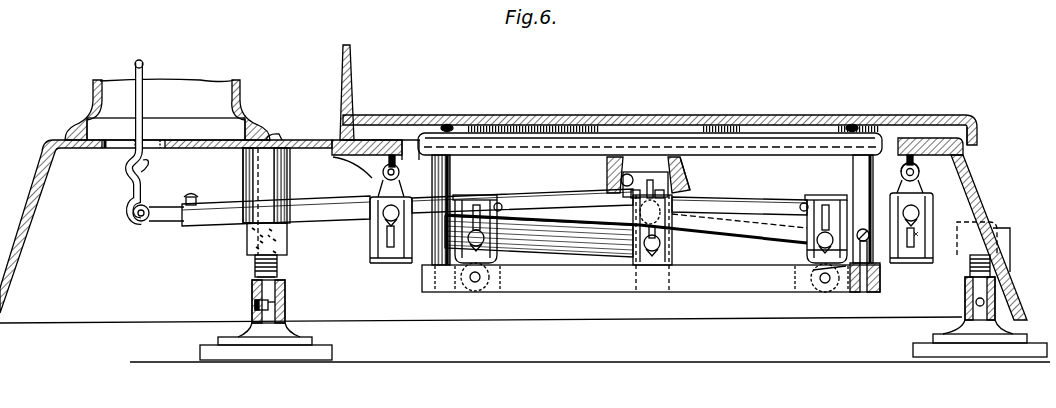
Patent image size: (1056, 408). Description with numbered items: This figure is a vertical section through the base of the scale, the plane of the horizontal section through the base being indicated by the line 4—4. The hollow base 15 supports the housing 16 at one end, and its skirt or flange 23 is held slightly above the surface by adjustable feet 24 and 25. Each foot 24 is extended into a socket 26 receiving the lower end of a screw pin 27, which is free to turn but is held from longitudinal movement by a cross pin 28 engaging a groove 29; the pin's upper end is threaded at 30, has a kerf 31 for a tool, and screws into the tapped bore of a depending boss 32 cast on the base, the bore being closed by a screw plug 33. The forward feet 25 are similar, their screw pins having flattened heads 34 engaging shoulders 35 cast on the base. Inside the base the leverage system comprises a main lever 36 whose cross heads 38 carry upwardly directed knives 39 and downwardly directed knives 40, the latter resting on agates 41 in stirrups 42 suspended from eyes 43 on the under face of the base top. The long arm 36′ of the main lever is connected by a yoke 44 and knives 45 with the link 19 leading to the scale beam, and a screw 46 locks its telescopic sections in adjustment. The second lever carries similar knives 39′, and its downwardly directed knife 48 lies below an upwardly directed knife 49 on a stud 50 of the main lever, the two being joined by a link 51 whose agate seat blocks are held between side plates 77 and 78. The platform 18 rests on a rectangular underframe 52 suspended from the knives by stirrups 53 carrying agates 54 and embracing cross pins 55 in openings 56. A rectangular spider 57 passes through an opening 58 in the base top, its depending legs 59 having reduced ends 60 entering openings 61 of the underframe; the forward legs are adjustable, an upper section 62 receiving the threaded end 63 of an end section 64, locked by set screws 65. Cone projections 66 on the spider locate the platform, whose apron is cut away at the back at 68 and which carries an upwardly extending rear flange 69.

The section line 4— 4 is at (23, 122).
The hollow base 15 is at (60, 140).
The housing 16 is at (242, 93).
The platform 18 is at (742, 114).
The link 19 is at (135, 68).
The skirt or flange 23 is at (980, 210).
The feet 24 is at (202, 350).
The feet 25 is at (914, 350).
The sockets 26 is at (288, 291).
The screw pins 27 is at (278, 276).
The cross pins 28 is at (255, 304).
The grooves 29 is at (278, 304).
The threaded portion 30 is at (278, 258).
The kerfs 31 is at (246, 238).
The depending boss 32 is at (292, 188).
The screw plug 33 is at (279, 138).
The flattened heads 34 is at (988, 225).
The shoulders 35 is at (1002, 247).
The main lever 36 is at (763, 207).
The long arm 36′ is at (522, 186).
The cross heads 38 is at (906, 206).
The knives 39 is at (812, 244).
The knives 39′ is at (539, 236).
The knives 40 is at (919, 210).
The agates 41 is at (386, 238).
The stirrups 42 is at (921, 178).
The staples or eyes 43 is at (400, 170).
The yoke 44 is at (130, 185).
The knives 45 is at (132, 220).
The screw 46 is at (192, 196).
The knife 48 is at (673, 248).
The knife 49 is at (661, 214).
The stud or arm 50 is at (739, 221).
The link 51 is at (690, 187).
The rectangular underframe 52 is at (606, 290).
The stirrups 53 is at (500, 260).
The agates 54 is at (492, 200).
The cross pins 55 is at (477, 284).
The openings 56 is at (494, 287).
The rectangular spider 57 is at (488, 132).
The opening 58 is at (412, 142).
The depending legs 59 is at (451, 172).
The reduced lower ends 60 is at (425, 280).
The openings 61 is at (864, 292).
The upper section 62 is at (852, 176).
The threaded upper ends 63 is at (813, 268).
The end sections 64 is at (822, 286).
The set screws 65 is at (873, 247).
The cone projections 66 is at (450, 124).
The cut-away 68 is at (350, 138).
The upwardly extending flange 69 is at (351, 53).
The side plate 77 is at (622, 181).
The side plate 78 is at (676, 157).